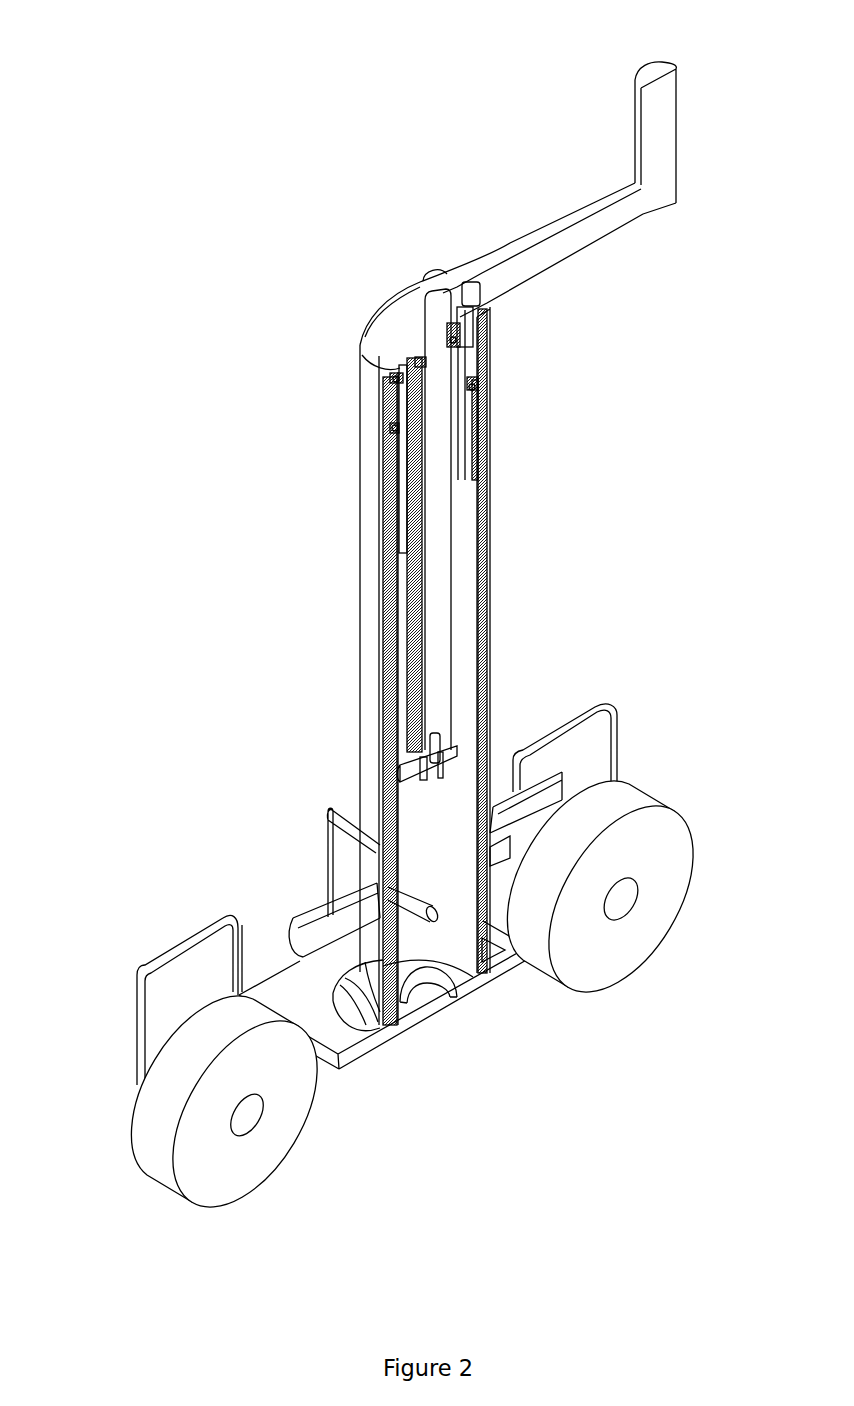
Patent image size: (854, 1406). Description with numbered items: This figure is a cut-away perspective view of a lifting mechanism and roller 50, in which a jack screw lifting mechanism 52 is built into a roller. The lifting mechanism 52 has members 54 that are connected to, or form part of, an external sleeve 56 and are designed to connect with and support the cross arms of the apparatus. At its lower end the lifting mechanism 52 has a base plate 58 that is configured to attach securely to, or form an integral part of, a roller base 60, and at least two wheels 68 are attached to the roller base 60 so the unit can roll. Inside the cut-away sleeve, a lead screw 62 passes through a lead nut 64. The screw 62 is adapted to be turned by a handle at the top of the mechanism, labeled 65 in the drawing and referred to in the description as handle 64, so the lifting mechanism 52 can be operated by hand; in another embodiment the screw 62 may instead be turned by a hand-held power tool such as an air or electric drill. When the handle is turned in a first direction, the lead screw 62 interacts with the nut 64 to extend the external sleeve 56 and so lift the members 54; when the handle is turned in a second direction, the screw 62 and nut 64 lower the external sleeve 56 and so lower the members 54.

The lifting mechanism and roller 50 is at (199, 413).
The lifting mechanism 52 is at (170, 671).
The members 54 is at (292, 913).
The external sleeve 56 is at (360, 587).
The base plate 58 is at (365, 1007).
The roller base 60 is at (473, 988).
The lead screw 62 is at (454, 538).
The lead nut 64 is at (491, 347).
The handle 65 is at (630, 93).
The wheels 68 is at (153, 1130).